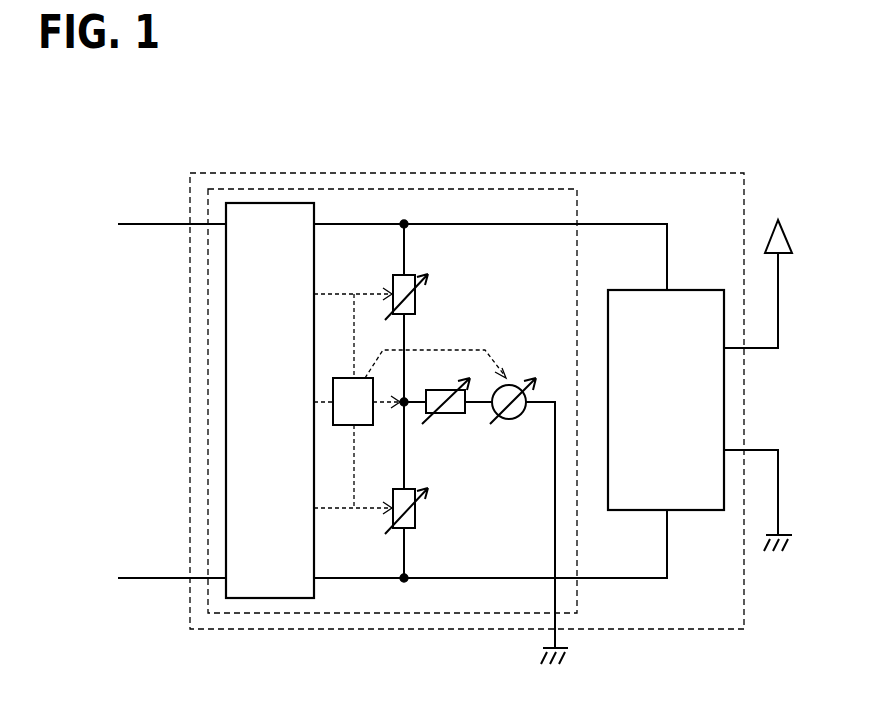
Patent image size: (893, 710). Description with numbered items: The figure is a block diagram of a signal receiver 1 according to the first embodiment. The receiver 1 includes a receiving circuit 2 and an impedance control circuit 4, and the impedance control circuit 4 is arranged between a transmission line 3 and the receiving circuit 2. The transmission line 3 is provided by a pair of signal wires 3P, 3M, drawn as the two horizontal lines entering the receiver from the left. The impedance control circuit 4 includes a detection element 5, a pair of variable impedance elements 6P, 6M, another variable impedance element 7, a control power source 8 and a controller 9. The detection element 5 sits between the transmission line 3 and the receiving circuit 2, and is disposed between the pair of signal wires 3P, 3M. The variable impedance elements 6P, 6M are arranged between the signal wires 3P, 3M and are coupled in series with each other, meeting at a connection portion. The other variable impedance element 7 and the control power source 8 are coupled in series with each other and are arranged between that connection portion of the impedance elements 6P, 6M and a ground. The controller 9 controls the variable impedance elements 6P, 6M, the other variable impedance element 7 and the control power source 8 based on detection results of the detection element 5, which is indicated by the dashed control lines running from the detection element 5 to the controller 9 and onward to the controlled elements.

The signal receiver 1 is at (490, 172).
The receiving circuit 2 is at (703, 288).
The transmission line 3 is at (125, 198).
The signal wire 3P is at (146, 222).
The signal wire 3M is at (150, 582).
The impedance control circuit 4 is at (373, 190).
The detection element 5 is at (316, 250).
The variable impedance element 6P is at (418, 300).
The variable impedance element 6M is at (418, 513).
The variable impedance element 7 is at (452, 422).
The control power source 8 is at (515, 422).
The controller 9 is at (340, 427).